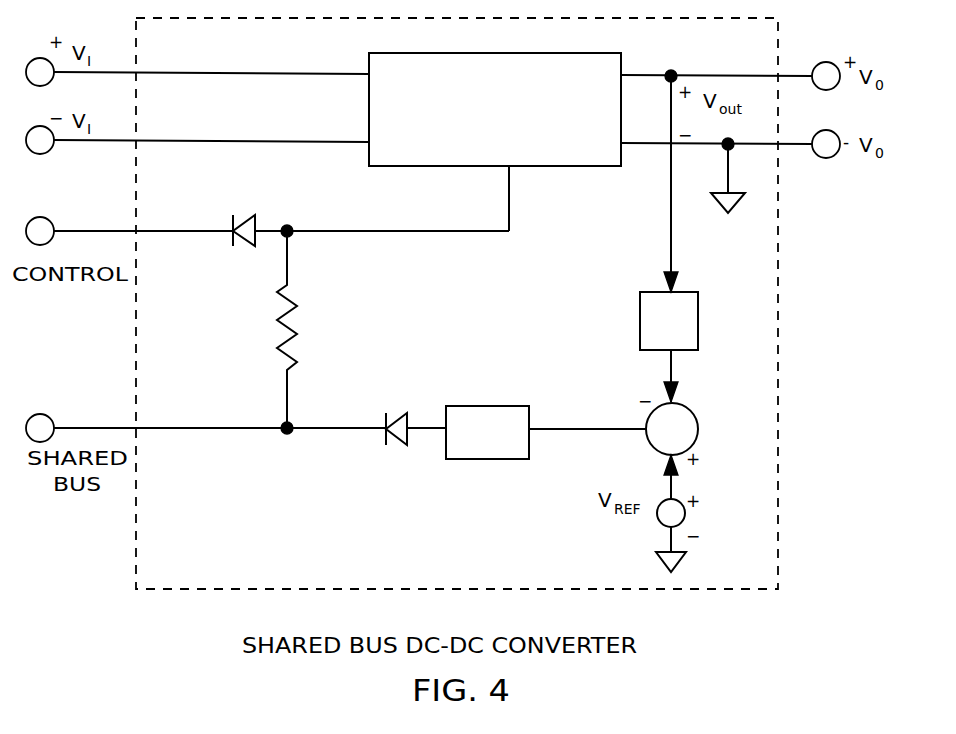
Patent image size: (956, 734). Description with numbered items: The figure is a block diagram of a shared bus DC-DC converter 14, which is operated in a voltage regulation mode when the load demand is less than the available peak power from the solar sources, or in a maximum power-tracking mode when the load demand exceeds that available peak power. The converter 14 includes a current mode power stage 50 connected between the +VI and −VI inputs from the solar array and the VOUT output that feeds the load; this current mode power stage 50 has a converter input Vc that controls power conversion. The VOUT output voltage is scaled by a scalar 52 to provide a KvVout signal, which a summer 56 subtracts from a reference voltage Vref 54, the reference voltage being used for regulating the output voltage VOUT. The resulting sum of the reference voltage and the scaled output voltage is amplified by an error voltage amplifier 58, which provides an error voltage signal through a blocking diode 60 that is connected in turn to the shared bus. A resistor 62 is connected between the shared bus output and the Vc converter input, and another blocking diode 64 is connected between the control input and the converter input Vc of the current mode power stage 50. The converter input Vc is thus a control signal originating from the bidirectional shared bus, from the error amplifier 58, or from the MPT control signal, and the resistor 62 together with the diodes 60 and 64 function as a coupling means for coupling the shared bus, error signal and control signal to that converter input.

The DC-DC converter 14 is at (757, 590).
The current mode power stage 50 is at (568, 166).
The scalar 52 is at (698, 302).
The reference voltage Vref 54 is at (656, 516).
The summer 56 is at (697, 420).
The error voltage amplifier 58 is at (489, 406).
The blocking diode 60 is at (401, 447).
The resistor 62 is at (297, 291).
The blocking diode 64 is at (251, 246).